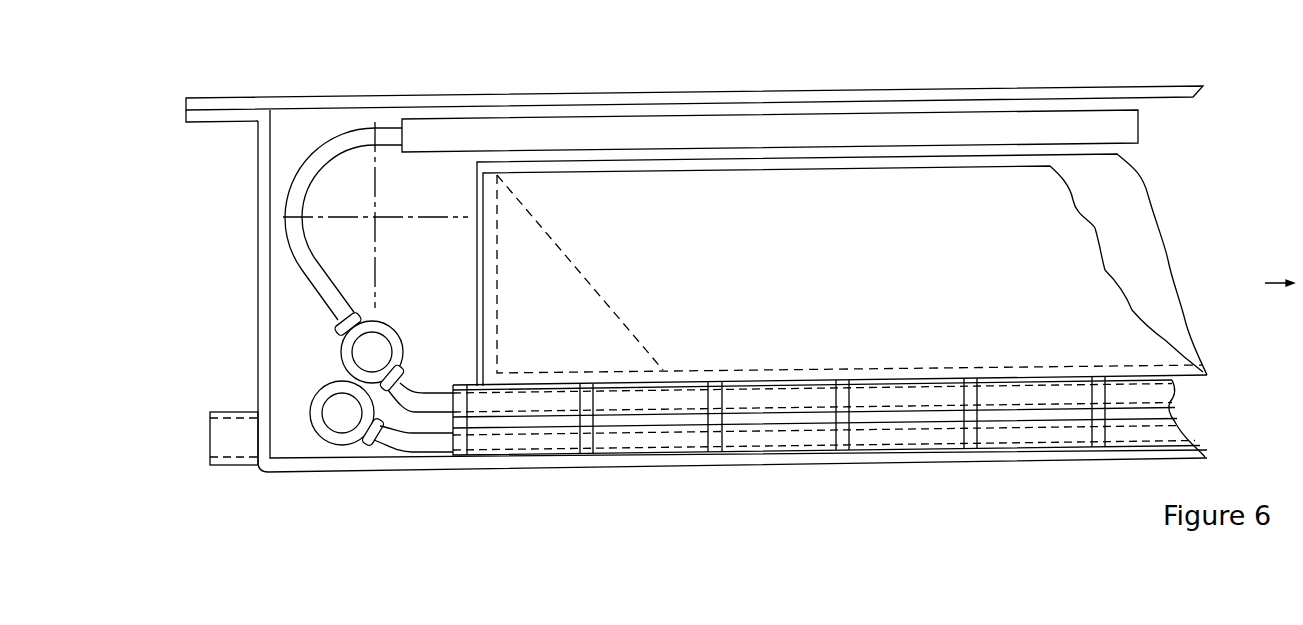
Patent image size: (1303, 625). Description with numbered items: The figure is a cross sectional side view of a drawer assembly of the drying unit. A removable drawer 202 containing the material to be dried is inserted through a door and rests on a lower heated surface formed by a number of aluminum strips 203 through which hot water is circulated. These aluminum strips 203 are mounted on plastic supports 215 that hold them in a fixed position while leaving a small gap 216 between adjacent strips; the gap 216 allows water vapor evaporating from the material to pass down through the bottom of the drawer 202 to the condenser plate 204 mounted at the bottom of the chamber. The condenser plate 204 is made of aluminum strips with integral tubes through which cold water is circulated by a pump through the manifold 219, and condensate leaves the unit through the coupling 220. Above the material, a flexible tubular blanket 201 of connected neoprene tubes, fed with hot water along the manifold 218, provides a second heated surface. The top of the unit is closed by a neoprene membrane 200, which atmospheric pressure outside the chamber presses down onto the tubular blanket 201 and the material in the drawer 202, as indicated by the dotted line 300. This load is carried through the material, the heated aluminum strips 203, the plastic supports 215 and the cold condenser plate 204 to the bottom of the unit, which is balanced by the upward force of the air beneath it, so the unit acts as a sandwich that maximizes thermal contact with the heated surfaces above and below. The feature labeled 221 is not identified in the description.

The neoprene membrane 200 is at (1105, 87).
The tubular blanket 201 is at (1030, 128).
The drawer 202 is at (1047, 255).
The aluminum strips 203 is at (760, 395).
The condenser plate 204 is at (1033, 460).
The plastic supports 215 is at (587, 433).
The gap 216 is at (575, 624).
The manifold 218 is at (372, 352).
The manifold 219 is at (342, 413).
The coupling 220 is at (235, 437).
The seam 221 is at (1083, 377).
The dotted line 300 is at (613, 313).